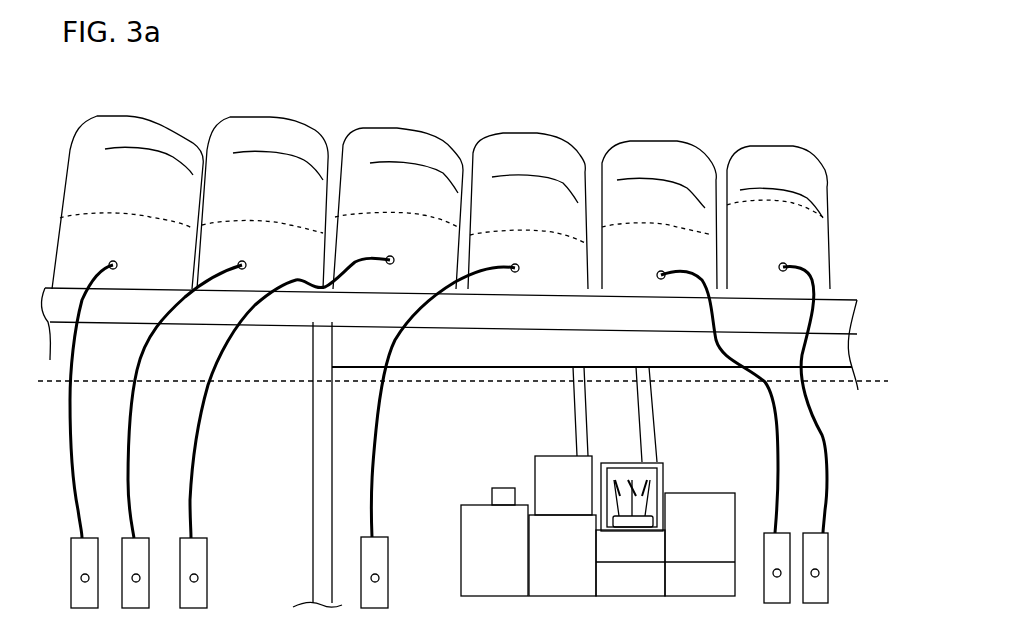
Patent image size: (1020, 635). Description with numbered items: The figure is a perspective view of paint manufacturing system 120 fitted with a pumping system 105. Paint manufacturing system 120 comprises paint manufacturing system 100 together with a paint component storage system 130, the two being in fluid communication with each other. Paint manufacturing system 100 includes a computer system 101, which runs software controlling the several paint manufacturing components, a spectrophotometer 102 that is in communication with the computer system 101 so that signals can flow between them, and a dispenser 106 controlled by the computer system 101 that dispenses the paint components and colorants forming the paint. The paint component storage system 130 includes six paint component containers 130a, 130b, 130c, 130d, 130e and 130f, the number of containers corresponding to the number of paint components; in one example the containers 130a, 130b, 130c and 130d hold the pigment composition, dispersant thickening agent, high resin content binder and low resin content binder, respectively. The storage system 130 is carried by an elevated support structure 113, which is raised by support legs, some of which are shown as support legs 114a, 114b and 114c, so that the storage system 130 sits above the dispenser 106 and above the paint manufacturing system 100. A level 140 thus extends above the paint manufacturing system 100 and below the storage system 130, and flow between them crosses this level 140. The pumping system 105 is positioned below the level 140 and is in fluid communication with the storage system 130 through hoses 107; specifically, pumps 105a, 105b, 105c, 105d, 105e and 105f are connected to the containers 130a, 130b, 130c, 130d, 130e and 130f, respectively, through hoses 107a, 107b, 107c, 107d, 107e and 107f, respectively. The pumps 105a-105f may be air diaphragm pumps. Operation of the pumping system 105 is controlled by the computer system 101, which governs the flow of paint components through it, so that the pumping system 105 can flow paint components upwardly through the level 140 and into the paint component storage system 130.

The paint manufacturing system 100 is at (494, 463).
The computer system 101 is at (563, 485).
The spectrophotometer 102 is at (494, 498).
The pumping system 105 is at (865, 560).
The pump 105a is at (82, 555).
The pump 105b is at (127, 552).
The pump 105c is at (183, 548).
The pump 105d is at (382, 548).
The pump 105e is at (785, 543).
The pump 105f is at (825, 545).
The dispenser 106 is at (645, 521).
The hoses 107 is at (842, 465).
The hose 107a is at (70, 440).
The hose 107b is at (128, 445).
The hose 107c is at (203, 440).
The hose 107d is at (380, 430).
The hose 107e is at (770, 454).
The hose 107f is at (827, 447).
The elevated support structure 113 is at (450, 339).
The support leg 114a is at (322, 569).
The support leg 114b is at (580, 431).
The support leg 114c is at (647, 412).
The paint manufacturing system 120 is at (183, 108).
The paint component storage system 130 is at (842, 207).
The paint component container 130a is at (127, 202).
The paint component container 130b is at (262, 203).
The paint component container 130c is at (398, 208).
The paint component container 130d is at (528, 211).
The paint component container 130e is at (659, 215).
The paint component container 130f is at (778, 217).
The level 140 is at (480, 382).